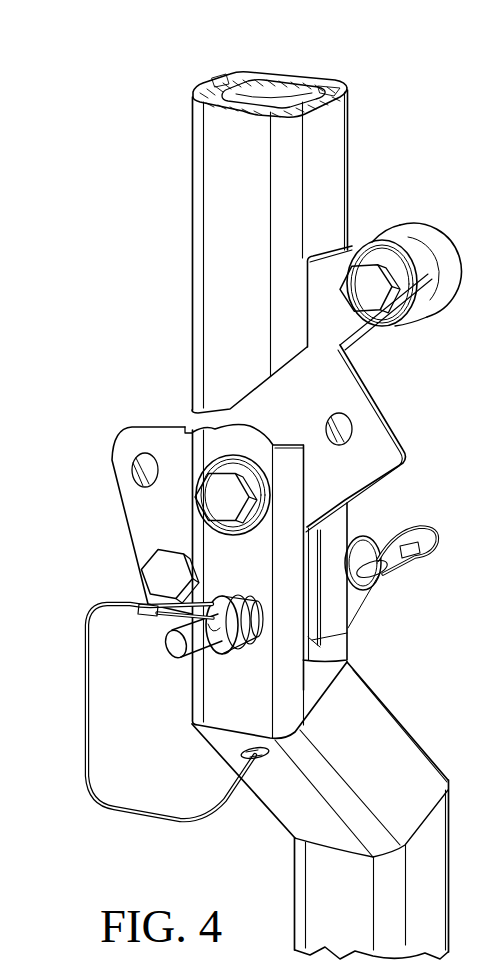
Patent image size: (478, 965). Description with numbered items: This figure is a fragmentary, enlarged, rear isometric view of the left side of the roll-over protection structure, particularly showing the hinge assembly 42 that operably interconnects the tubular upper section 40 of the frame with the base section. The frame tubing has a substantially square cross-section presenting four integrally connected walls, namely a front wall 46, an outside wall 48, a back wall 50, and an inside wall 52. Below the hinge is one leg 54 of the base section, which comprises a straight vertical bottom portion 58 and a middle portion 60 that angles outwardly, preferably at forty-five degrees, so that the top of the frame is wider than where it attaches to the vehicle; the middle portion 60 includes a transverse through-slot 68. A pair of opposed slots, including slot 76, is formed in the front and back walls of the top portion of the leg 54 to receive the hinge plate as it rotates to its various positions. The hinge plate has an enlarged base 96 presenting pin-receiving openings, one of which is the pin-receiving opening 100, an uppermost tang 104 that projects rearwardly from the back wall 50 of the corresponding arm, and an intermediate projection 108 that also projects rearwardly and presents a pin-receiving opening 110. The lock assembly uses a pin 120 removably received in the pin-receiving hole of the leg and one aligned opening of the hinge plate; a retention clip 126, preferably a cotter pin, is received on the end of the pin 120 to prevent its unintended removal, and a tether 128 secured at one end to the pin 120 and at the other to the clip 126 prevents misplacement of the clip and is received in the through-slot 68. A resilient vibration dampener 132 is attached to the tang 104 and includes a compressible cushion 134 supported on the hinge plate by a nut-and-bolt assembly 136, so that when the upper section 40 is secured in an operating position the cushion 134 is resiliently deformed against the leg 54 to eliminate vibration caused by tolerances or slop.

The upper section 40 is at (190, 178).
The hinge assembly 42 is at (106, 582).
The front wall 46 is at (217, 77).
The outside wall 48 is at (230, 246).
The back wall 50 is at (333, 148).
The inside wall 52 is at (310, 79).
The leg 54 is at (304, 798).
The bottom portion 58 is at (295, 912).
The middle portion 60 is at (283, 822).
The through-slot 68 is at (246, 754).
The slot 76 is at (348, 661).
The enlarged base 96 is at (130, 537).
The pin-receiving opening 100 is at (128, 488).
The tang 104 is at (352, 247).
The intermediate projection 108 is at (410, 452).
The pin-receiving opening 110 is at (346, 424).
The pin 120 is at (172, 646).
The retention clip 126 is at (362, 536).
The tether 128 is at (93, 790).
The vibration dampener 132 is at (447, 282).
The compressible cushion 134 is at (436, 256).
The nut-and-bolt assembly 136 is at (362, 303).